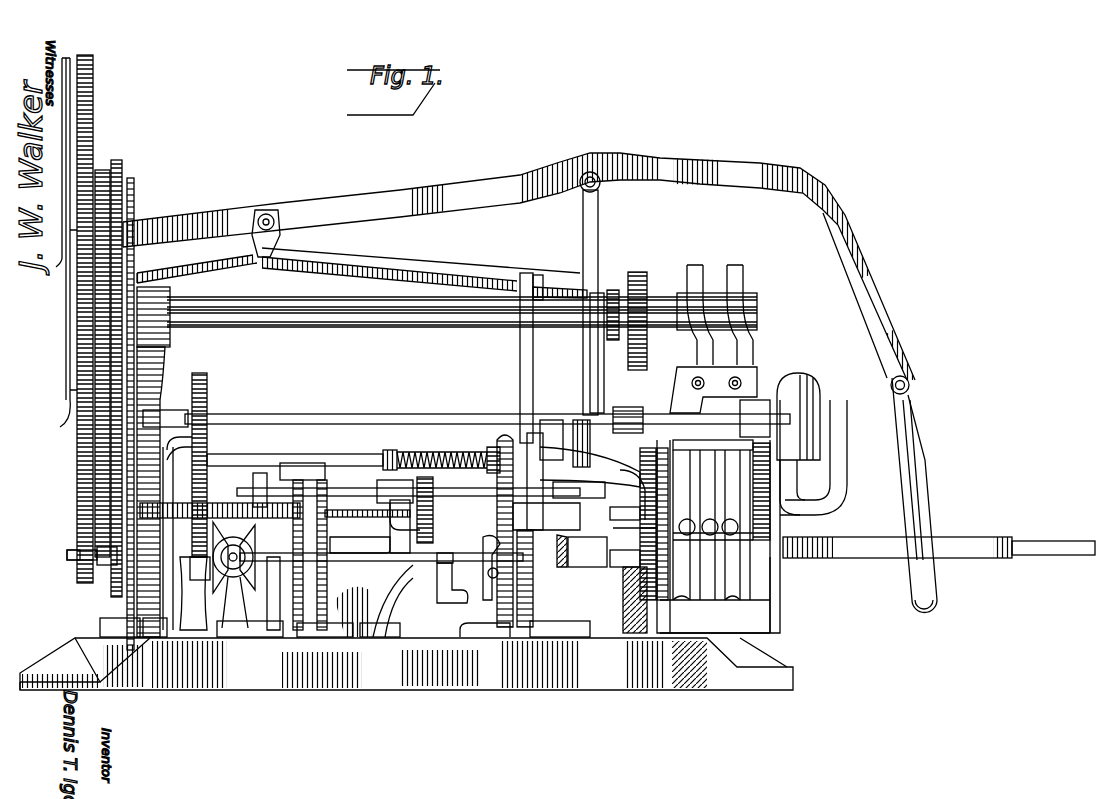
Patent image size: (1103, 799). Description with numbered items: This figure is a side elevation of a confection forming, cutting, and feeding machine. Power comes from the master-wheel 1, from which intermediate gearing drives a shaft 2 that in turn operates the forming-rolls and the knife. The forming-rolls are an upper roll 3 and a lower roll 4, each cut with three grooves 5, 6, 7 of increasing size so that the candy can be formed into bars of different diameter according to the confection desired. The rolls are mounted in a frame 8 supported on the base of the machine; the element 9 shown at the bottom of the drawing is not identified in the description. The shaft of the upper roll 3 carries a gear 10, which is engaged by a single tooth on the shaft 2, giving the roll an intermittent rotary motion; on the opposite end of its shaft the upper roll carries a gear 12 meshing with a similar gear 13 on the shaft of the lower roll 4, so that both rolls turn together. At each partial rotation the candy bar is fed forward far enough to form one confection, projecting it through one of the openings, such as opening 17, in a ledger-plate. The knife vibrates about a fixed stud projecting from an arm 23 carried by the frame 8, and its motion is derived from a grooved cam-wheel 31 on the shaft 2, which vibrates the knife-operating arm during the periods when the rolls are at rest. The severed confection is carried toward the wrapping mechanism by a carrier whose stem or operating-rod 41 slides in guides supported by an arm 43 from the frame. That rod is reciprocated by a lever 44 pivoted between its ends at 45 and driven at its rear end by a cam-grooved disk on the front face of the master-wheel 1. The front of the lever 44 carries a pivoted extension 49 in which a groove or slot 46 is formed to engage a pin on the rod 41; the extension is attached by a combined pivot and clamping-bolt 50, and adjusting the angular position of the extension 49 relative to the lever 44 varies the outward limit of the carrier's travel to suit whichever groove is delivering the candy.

The master-wheel 1 is at (85, 428).
The shaft 2 is at (310, 413).
The upper forming-roll 3 is at (745, 472).
The lower forming-roll 4 is at (780, 590).
The groove 5 is at (738, 585).
The groove 6 is at (700, 588).
The groove 7 is at (690, 590).
The frame 8 is at (781, 576).
The base 9 is at (743, 640).
The gear 10 is at (767, 464).
The gear 12 is at (643, 487).
The gear 13 is at (640, 528).
The opening 17 is at (770, 400).
The arm 23 is at (815, 512).
The cam-wheel 31 is at (818, 386).
The stem or operating-rod 41 is at (1060, 555).
The arm 43 is at (985, 558).
The lever 44 is at (705, 185).
The pivot 45 is at (270, 212).
The groove or slot 46 is at (918, 478).
The pivoted extension 49 is at (920, 442).
The combined pivot and clamping-bolt 50 is at (910, 385).